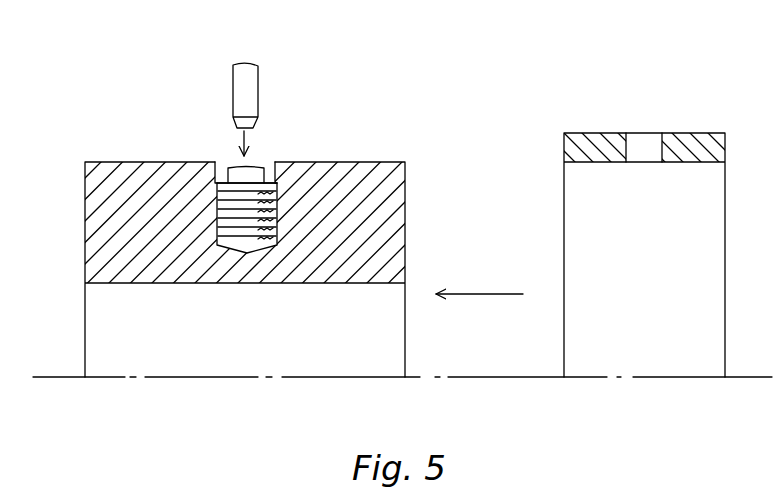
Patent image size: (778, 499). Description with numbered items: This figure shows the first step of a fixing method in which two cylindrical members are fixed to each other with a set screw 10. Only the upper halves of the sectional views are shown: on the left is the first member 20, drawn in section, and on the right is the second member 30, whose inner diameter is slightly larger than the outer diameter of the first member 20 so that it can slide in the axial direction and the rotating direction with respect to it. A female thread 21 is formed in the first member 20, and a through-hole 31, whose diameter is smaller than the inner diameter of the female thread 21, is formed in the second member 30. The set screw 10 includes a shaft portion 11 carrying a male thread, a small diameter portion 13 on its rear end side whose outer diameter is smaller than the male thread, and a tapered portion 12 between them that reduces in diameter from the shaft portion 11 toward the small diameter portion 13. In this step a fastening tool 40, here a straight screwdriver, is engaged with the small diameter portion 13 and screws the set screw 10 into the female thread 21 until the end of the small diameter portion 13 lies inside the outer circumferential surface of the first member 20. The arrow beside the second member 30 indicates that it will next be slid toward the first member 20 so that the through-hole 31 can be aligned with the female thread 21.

The set screw 10 is at (241, 156).
The shaft portion 11 is at (278, 216).
The tapered portion 12 is at (216, 182).
The small diameter portion 13 is at (254, 162).
The first member 20 is at (137, 149).
The female thread 21 is at (266, 160).
The second member 30 is at (719, 103).
The through-hole 31 is at (634, 150).
The fastening tool 40 is at (251, 82).